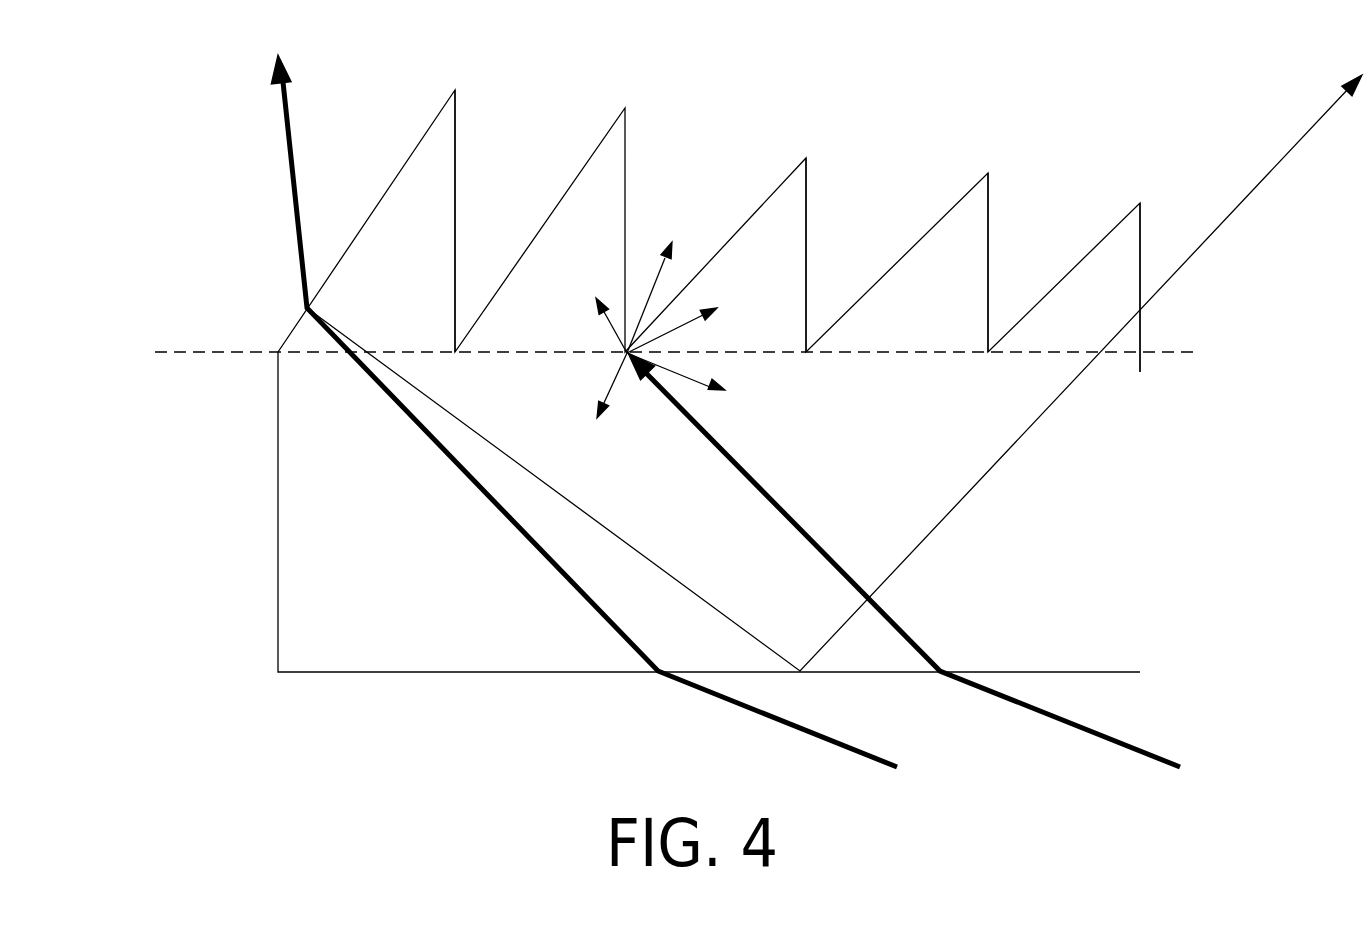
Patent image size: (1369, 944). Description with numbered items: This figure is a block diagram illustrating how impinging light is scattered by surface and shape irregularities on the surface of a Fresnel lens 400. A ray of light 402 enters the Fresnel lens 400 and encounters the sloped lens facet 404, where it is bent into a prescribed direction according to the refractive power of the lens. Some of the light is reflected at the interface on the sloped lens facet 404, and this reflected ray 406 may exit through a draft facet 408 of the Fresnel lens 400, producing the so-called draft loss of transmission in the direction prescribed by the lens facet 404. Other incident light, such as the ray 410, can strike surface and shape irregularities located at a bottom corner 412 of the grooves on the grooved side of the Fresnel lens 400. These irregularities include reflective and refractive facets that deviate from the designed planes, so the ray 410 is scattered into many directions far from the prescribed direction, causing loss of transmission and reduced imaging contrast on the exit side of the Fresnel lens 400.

The Fresnel lens 400 is at (292, 550).
The ray of light 402 is at (292, 203).
The sloped lens facet 404 is at (418, 134).
The reflected ray 406 is at (1045, 410).
The draft facet 408 is at (470, 147).
The incident ray 410 is at (1140, 753).
The bottom corner 412 is at (612, 359).